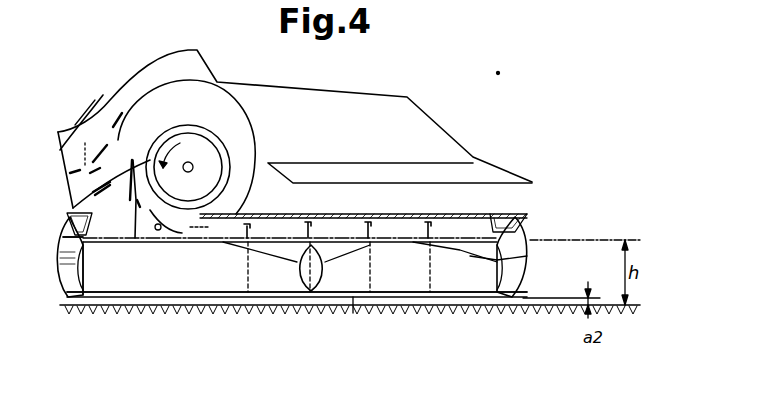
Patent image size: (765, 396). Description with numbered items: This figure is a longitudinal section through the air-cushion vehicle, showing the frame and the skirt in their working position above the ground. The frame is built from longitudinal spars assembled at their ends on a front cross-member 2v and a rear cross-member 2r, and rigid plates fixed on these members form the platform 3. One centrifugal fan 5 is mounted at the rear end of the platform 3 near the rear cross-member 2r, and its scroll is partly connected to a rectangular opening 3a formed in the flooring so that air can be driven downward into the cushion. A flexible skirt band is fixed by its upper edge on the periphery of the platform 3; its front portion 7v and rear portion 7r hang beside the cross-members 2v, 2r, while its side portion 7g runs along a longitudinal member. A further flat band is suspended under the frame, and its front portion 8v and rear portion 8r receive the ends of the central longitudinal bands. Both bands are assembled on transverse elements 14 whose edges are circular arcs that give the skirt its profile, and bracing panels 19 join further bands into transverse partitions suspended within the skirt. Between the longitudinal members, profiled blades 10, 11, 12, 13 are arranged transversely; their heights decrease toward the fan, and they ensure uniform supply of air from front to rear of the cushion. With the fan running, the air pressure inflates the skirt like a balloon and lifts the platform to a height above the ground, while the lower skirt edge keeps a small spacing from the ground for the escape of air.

The platform 3 is at (346, 215).
The rectangular opening 3a is at (126, 212).
The centrifugal fan 5 is at (107, 107).
The rear cross-member 2r is at (78, 226).
The front cross-member 2v is at (503, 223).
The rear portion of flexible band 7r is at (55, 258).
The front portion of flexible band 7v is at (531, 257).
The side portion of flexible band 7g is at (185, 282).
The rear portion of band 8r is at (85, 280).
The front portion of band 8v is at (498, 277).
The blade 10 is at (246, 230).
The blade 11 is at (308, 217).
The blade 12 is at (370, 222).
The blade 13 is at (437, 218).
The transverse element 14 is at (354, 323).
The bracing panel 19 is at (310, 268).